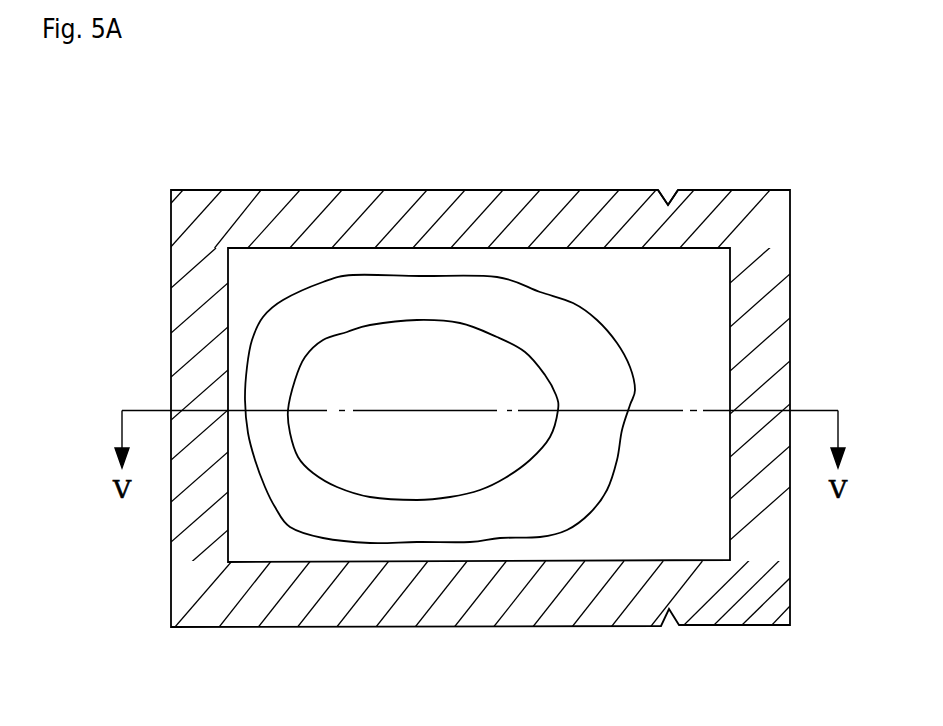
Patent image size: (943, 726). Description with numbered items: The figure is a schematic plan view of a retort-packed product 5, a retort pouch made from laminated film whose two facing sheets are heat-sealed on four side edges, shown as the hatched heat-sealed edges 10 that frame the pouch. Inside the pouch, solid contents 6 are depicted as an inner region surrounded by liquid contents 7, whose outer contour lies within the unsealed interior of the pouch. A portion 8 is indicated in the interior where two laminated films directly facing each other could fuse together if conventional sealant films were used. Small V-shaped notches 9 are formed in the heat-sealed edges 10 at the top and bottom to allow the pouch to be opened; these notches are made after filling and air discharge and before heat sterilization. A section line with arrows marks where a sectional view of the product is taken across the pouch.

The retort-packed product 5 is at (735, 187).
The solid contents 6 is at (428, 353).
The liquid contents 7 is at (538, 322).
The portion exhibiting possible fusion of two laminated films 8 is at (627, 515).
The notches 9 is at (668, 189).
The heat-sealed edges 10 is at (767, 272).